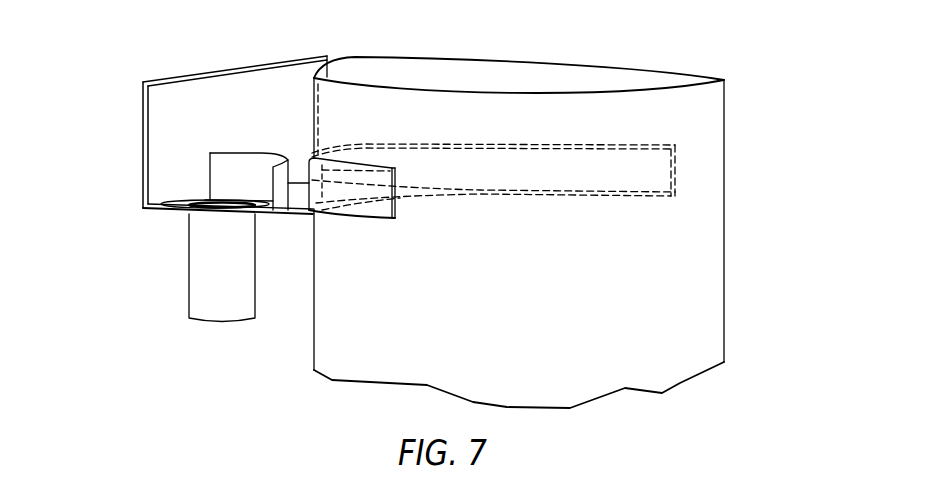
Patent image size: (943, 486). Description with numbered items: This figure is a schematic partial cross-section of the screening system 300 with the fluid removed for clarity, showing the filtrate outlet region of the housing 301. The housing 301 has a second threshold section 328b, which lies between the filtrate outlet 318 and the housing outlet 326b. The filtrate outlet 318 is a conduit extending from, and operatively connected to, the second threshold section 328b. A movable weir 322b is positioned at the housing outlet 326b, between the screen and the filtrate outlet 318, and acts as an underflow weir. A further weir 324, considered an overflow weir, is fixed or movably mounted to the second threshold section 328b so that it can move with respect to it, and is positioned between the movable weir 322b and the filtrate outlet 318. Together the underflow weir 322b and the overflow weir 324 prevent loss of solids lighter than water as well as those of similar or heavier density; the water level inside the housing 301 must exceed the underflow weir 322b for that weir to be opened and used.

The screening system 300 is at (429, 204).
The housing 301 is at (707, 278).
The filtrate outlet 318 is at (197, 293).
The movable weir 322b is at (380, 205).
The weir 324 is at (263, 175).
The housing outlet 326b is at (355, 166).
The second threshold section 328b is at (167, 135).